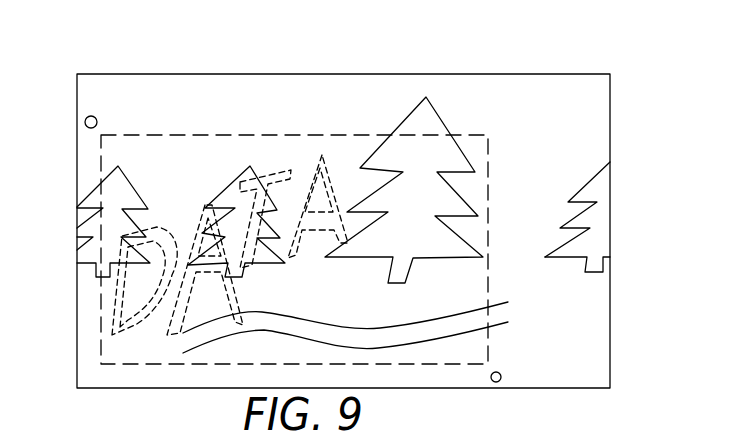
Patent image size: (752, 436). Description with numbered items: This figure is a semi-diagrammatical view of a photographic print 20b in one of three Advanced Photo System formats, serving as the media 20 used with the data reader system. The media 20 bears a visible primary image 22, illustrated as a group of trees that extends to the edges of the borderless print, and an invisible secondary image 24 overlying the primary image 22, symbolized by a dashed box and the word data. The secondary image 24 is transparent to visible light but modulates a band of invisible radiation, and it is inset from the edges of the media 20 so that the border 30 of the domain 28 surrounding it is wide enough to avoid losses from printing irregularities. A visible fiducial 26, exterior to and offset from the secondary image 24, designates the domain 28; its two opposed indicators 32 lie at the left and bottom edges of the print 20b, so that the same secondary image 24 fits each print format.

The media 20 is at (360, 194).
The print 20b is at (589, 74).
The visible primary image 22 is at (601, 237).
The secondary image 24 is at (111, 338).
The fiducial 26 is at (325, 226).
The domain 28 is at (300, 102).
The border 30 is at (363, 120).
The indicators 32 is at (96, 117).